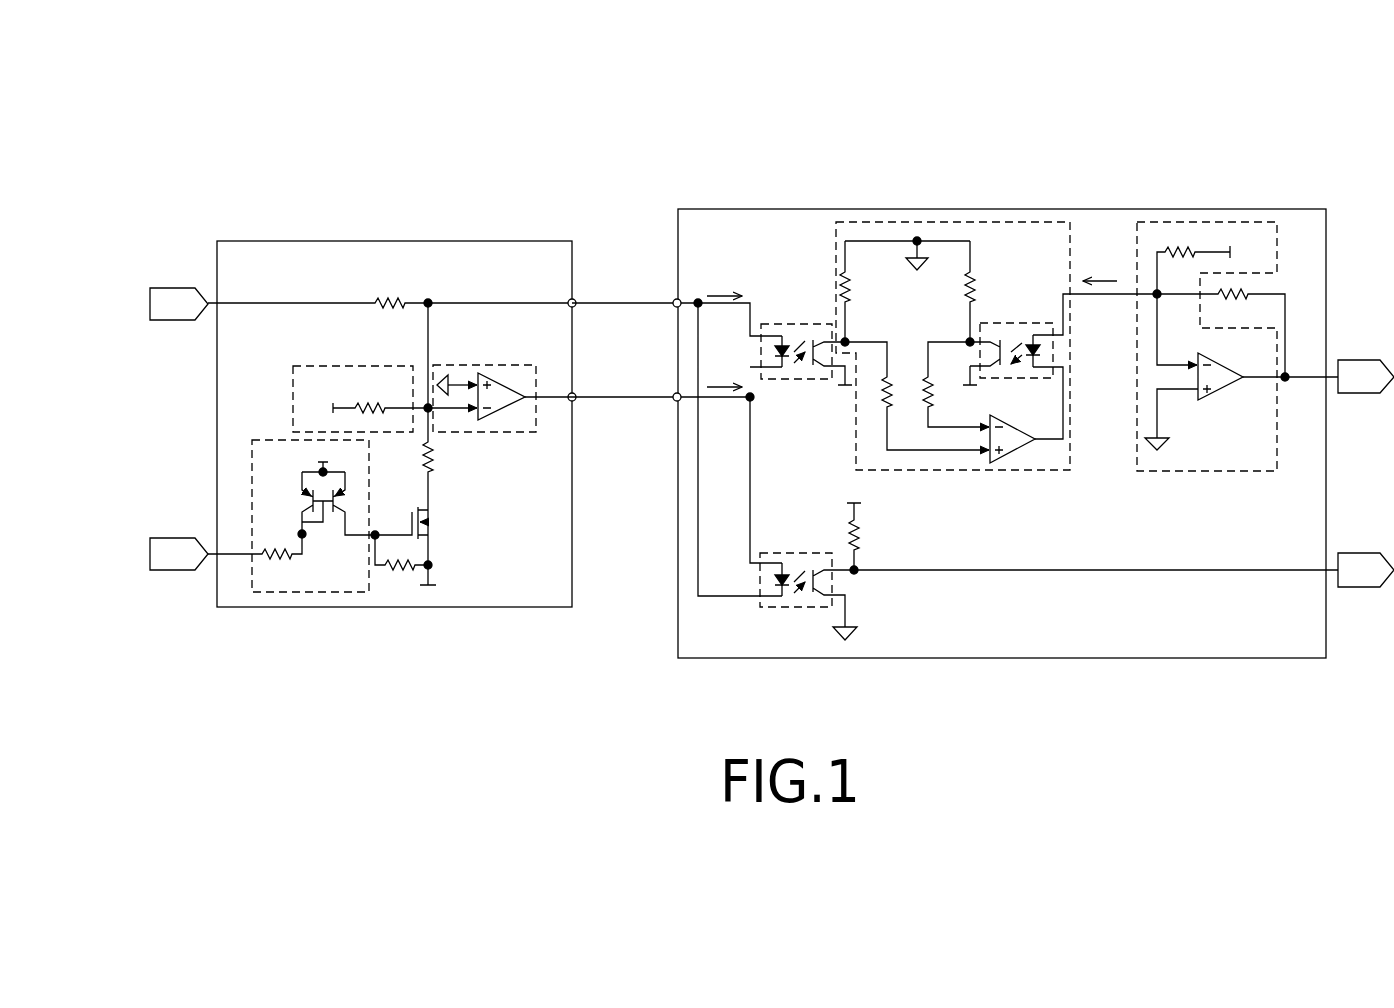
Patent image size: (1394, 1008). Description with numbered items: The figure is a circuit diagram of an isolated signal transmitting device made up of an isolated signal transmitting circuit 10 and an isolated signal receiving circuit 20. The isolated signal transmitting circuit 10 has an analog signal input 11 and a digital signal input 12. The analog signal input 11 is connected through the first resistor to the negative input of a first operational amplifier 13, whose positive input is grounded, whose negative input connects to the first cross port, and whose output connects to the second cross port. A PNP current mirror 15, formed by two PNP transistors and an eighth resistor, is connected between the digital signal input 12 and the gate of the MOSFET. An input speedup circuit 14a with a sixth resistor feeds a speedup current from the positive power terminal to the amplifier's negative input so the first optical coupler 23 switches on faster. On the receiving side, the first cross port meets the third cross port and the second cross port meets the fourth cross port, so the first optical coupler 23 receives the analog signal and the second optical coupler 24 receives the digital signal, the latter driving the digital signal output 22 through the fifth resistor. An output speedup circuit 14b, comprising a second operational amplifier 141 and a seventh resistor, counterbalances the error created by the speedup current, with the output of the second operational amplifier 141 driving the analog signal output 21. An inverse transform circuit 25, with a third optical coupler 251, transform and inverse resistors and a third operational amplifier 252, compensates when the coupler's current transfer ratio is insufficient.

The isolated signal transmitting circuit 10 is at (490, 241).
The analog signal input 11 is at (179, 304).
The digital signal input 12 is at (179, 554).
The first operational amplifier 13 is at (486, 365).
The input speedup circuit 14a is at (367, 366).
The output speedup circuit 14b is at (1188, 471).
The PNP current mirror 15 is at (285, 440).
The isolated signal receiving circuit 20 is at (786, 209).
The analog signal output 21 is at (1366, 376).
The digital signal output 22 is at (1124, 570).
The first optical coupler 23 is at (822, 324).
The second optical coupler 24 is at (770, 553).
The inverse transform circuit 25 is at (960, 470).
The third optical coupler 251 is at (990, 323).
The third operational amplifier 252 is at (995, 418).
The second operational amplifier 141 is at (1203, 398).